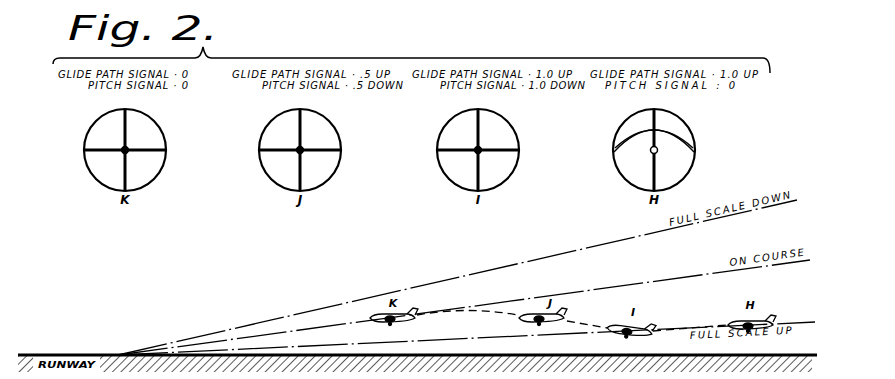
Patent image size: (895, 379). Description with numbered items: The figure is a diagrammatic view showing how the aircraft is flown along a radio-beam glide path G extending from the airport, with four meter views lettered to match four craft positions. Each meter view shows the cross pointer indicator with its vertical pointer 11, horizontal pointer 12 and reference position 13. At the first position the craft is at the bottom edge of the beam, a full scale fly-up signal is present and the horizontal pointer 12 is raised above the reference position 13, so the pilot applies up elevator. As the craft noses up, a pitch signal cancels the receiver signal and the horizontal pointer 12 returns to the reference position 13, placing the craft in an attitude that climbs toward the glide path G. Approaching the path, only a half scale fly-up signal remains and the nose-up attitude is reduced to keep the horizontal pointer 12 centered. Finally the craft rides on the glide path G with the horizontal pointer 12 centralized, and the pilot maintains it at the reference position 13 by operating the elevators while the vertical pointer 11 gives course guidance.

The vertical pointer 11 is at (127, 133).
The horizontal pointer 12 is at (93, 152).
The reference position 13 is at (298, 151).
The glide path G is at (642, 283).